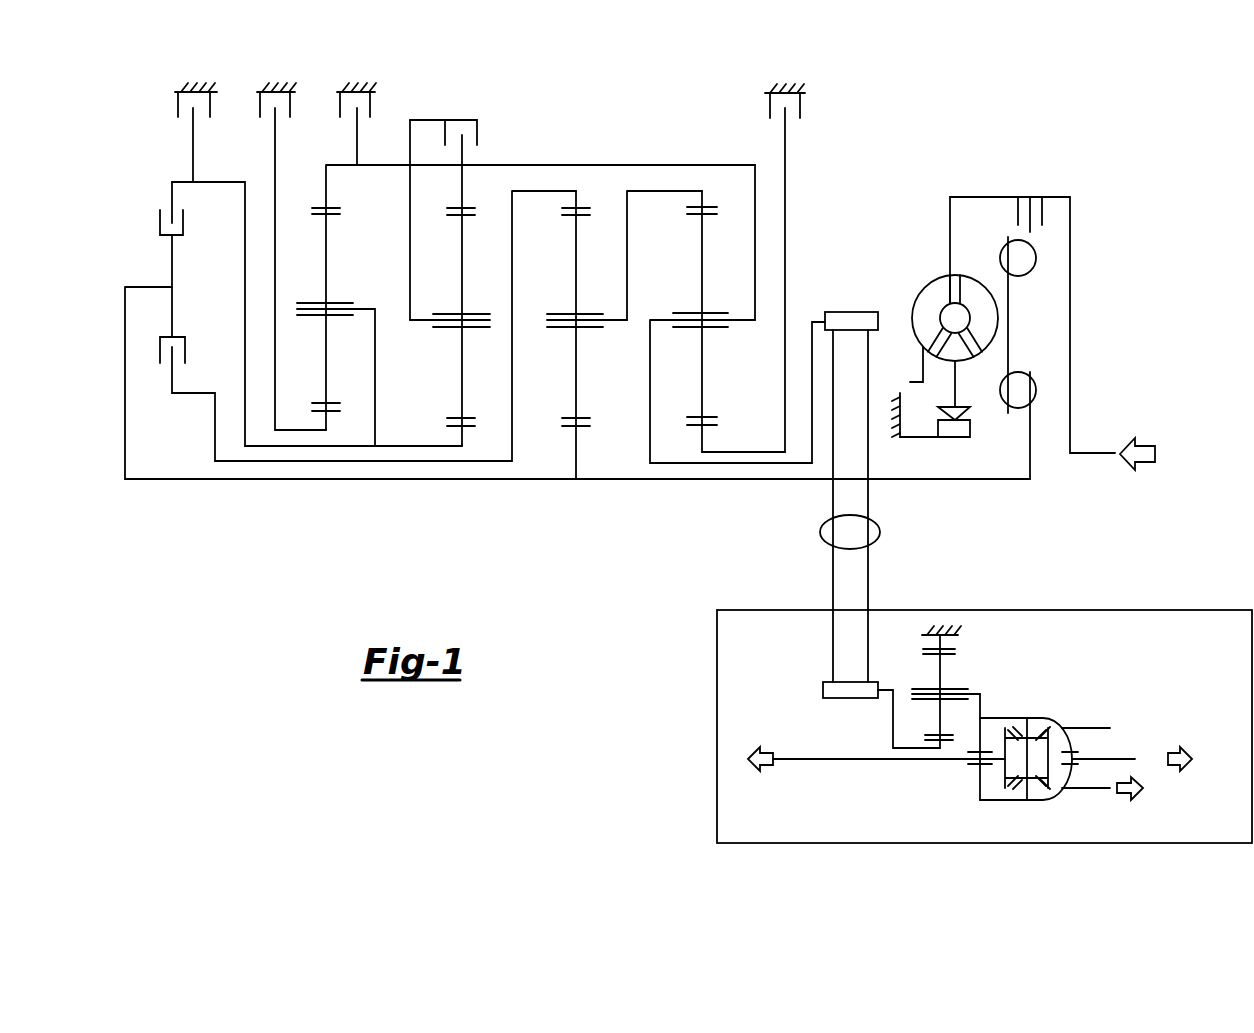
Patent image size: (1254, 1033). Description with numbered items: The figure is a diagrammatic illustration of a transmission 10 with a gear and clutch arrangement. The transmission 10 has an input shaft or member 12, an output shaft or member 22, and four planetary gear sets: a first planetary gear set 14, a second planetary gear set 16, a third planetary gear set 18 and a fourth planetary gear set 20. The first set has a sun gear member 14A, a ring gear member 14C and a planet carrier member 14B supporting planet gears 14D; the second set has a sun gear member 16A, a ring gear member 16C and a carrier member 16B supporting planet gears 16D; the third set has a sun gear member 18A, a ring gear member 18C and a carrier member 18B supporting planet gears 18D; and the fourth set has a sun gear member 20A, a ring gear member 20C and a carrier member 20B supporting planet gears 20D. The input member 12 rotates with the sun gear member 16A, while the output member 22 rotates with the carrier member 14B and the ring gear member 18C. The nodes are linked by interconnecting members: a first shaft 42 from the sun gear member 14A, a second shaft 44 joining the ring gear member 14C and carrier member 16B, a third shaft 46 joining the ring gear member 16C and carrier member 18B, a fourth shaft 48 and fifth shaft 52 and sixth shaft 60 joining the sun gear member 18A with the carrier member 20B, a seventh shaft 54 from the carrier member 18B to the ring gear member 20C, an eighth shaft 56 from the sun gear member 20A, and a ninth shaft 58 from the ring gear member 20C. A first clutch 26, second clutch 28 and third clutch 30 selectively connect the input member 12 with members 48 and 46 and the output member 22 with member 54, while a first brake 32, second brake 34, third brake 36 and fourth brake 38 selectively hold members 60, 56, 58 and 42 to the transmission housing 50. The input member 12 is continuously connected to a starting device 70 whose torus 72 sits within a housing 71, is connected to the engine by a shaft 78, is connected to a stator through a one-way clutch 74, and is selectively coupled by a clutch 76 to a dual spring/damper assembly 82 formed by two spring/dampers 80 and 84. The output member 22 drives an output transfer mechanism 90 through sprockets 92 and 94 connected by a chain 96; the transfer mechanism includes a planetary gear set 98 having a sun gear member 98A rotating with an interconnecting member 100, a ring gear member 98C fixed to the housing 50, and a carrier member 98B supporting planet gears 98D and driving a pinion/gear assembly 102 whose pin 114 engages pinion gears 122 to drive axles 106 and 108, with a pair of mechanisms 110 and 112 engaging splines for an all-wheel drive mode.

The transmission 10 is at (868, 69).
The input shaft or member 12 is at (920, 482).
The first planetary gear set 14 is at (708, 201).
The sun gear member 14A is at (697, 416).
The planet gear carrier member 14B is at (715, 329).
The ring gear member 14C is at (697, 217).
The planet gears 14D is at (715, 312).
The second planetary gear set 16 is at (592, 201).
The sun gear member 16A is at (572, 417).
The planet gear carrier member 16B is at (588, 329).
The ring gear member 16C is at (572, 217).
The planet gears 16D is at (590, 312).
The third planetary gear set 18 is at (472, 201).
The sun gear member 18A is at (458, 417).
The planet gear carrier member 18B is at (475, 329).
The ring gear member 18C is at (460, 217).
The planet gears 18D is at (475, 312).
The fourth planetary gear set 20 is at (335, 203).
The sun gear member 20A is at (318, 402).
The planet gear carrier member 20B is at (340, 317).
The ring gear member 20C is at (320, 216).
The planet gears 20D is at (338, 302).
The output shaft or member 22 is at (680, 164).
The first clutch 26 is at (184, 222).
The second clutch 28 is at (186, 350).
The third clutch 30 is at (478, 135).
The first brake 32 is at (178, 110).
The second brake 34 is at (260, 110).
The third brake 36 is at (340, 110).
The fourth brake 38 is at (801, 102).
The first shaft or interconnecting member 42 is at (787, 182).
The second shaft or interconnecting member 44 is at (629, 285).
The third shaft or interconnecting member 46 is at (514, 285).
The fourth shaft or interconnecting member 48 is at (362, 445).
The transmission housing 50 is at (355, 92).
The fifth shaft or interconnecting member 52 is at (377, 422).
The seventh shaft or interconnecting member 54 is at (412, 285).
The eighth shaft or interconnecting member 56 is at (276, 282).
The ninth shaft or interconnecting member 58 is at (358, 150).
The sixth shaft or interconnecting member 60 is at (194, 155).
The starting device 70 is at (1077, 150).
The housing 71 is at (912, 385).
The torus 72 is at (921, 293).
The one-way clutch 74 is at (962, 413).
The clutch 76 is at (1043, 218).
The shaft or member 78 is at (990, 198).
The spring/damper 80 is at (1036, 272).
The dual spring/damper assembly 82 is at (1010, 348).
The spring/damper 84 is at (1037, 406).
The output transfer mechanism 90 is at (691, 824).
The sprocket 92 is at (850, 311).
The sprocket 94 is at (823, 689).
The chain 96 is at (820, 532).
The final drive planetary gear set 98 is at (1027, 644).
The sun gear member 98A is at (927, 735).
The planet gear carrier member 98B is at (956, 703).
The ring gear member 98C is at (950, 660).
The planet gears 98D is at (920, 686).
The shaft or interconnecting member 100 is at (893, 721).
The pinion/gear assembly 102 is at (1033, 808).
The axle 106 is at (847, 760).
The axle 108 is at (1135, 758).
The mechanism 110 is at (1103, 727).
The mechanism 112 is at (1105, 789).
The pin 114 is at (1040, 717).
The pinion gears 122 is at (993, 779).